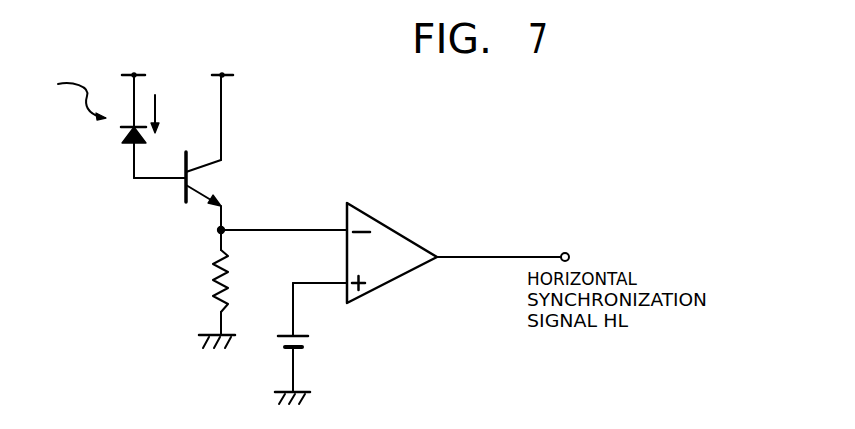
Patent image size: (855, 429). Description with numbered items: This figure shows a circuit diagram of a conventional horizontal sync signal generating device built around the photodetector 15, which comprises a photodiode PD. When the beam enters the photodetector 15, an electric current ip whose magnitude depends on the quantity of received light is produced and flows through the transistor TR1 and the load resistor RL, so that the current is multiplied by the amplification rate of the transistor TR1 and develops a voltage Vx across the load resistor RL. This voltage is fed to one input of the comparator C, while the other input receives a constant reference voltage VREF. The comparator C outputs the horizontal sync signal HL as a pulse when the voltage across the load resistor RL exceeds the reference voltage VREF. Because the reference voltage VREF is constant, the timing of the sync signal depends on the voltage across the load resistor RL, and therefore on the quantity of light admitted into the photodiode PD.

The photodetector 15 is at (122, 135).
The transistor TR1 is at (223, 151).
The load resistor RL is at (200, 289).
The comparator C is at (401, 227).
The reference voltage VREF is at (324, 343).
The electric current ip is at (164, 112).